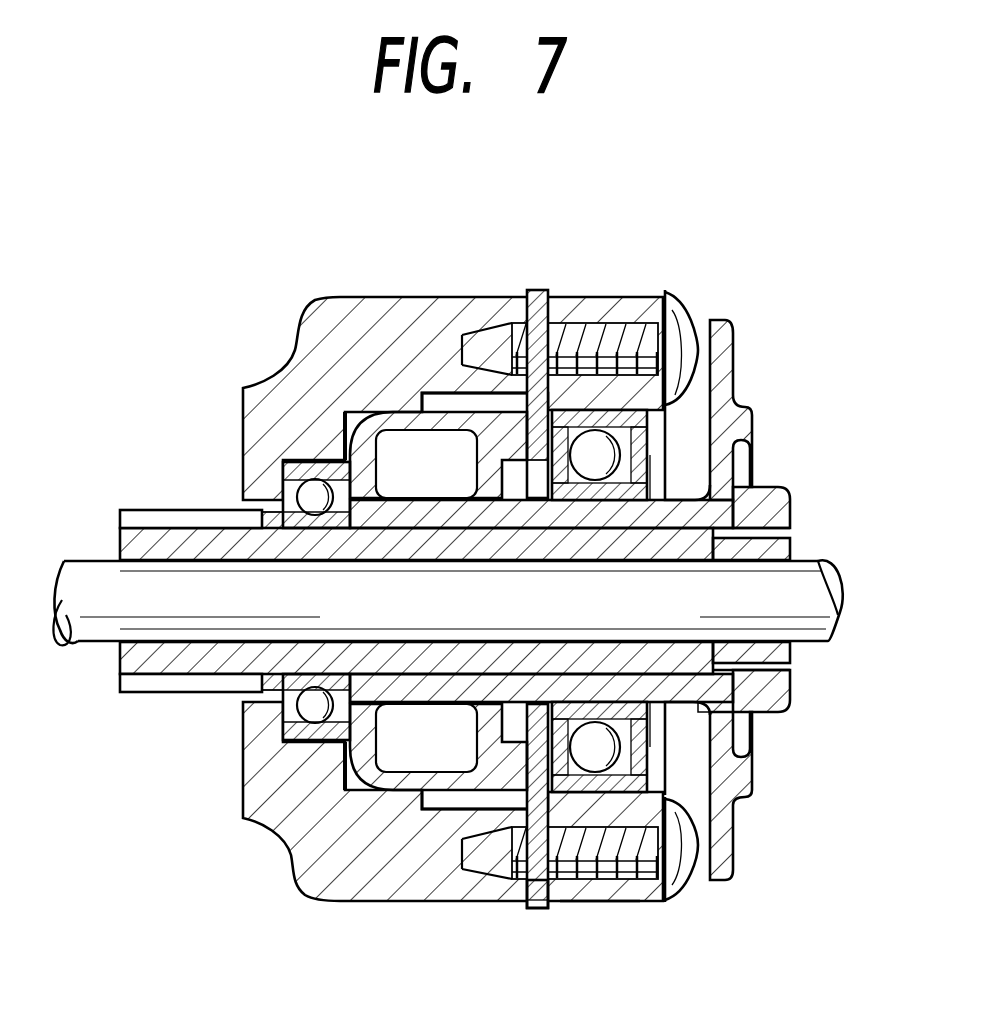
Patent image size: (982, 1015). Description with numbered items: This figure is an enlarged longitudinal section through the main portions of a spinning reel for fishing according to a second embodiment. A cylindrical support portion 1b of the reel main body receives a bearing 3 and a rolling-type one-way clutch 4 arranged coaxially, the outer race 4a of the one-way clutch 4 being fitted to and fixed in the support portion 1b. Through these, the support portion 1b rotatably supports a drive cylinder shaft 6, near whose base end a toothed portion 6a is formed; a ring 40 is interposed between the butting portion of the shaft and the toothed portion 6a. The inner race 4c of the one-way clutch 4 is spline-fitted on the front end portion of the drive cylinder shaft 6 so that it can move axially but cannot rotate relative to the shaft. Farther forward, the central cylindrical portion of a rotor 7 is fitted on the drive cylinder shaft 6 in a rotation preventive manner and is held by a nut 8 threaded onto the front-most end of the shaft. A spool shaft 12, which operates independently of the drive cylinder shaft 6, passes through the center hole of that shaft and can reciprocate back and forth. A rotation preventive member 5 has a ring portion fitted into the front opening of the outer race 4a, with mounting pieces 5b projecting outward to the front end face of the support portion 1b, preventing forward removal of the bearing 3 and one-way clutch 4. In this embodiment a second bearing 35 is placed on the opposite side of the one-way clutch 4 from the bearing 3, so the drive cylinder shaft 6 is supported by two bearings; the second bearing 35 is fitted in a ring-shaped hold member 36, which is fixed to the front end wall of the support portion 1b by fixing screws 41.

The support portion 1b is at (318, 318).
The bearing 3 is at (287, 470).
The one-way clutch 4 is at (407, 452).
The outer race 4a is at (455, 400).
The inner race 4c is at (437, 515).
The rotation preventive member 5 is at (540, 292).
The mounting pieces 5b is at (530, 910).
The drive cylinder shaft 6 is at (157, 660).
The toothed portion 6a is at (140, 515).
The rotor 7 is at (725, 365).
The nut 8 is at (787, 512).
The spool shaft 12 is at (808, 607).
The second bearing 35 is at (605, 452).
The hold member 36 is at (603, 890).
The ring 40 is at (262, 680).
The fixing screws 41 is at (612, 330).